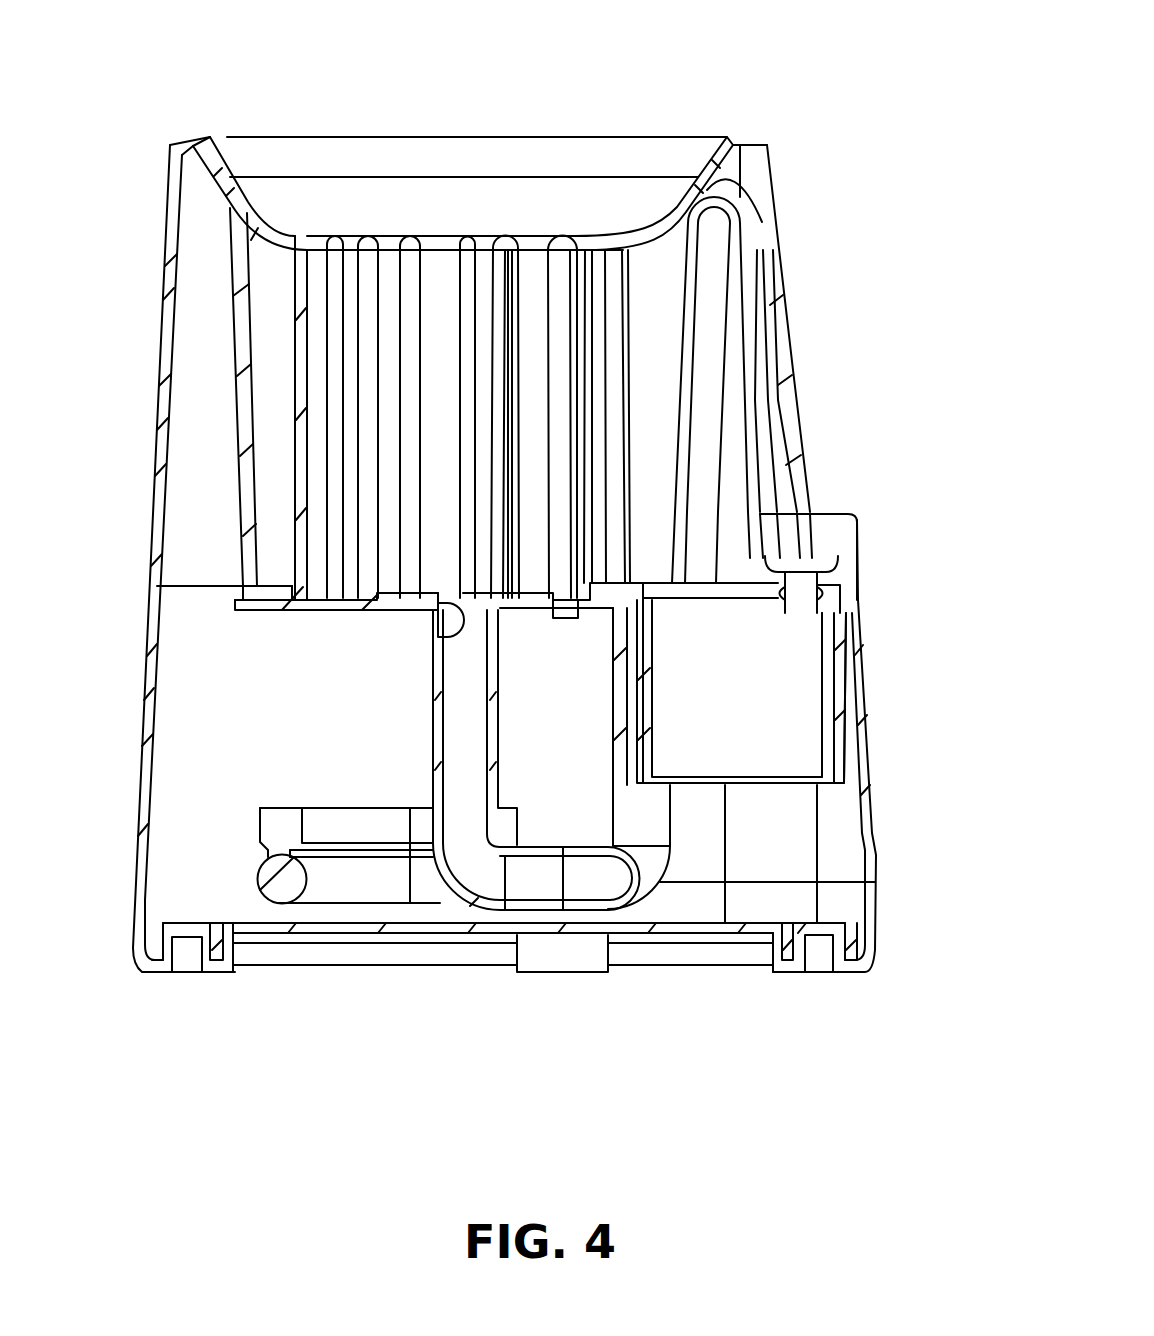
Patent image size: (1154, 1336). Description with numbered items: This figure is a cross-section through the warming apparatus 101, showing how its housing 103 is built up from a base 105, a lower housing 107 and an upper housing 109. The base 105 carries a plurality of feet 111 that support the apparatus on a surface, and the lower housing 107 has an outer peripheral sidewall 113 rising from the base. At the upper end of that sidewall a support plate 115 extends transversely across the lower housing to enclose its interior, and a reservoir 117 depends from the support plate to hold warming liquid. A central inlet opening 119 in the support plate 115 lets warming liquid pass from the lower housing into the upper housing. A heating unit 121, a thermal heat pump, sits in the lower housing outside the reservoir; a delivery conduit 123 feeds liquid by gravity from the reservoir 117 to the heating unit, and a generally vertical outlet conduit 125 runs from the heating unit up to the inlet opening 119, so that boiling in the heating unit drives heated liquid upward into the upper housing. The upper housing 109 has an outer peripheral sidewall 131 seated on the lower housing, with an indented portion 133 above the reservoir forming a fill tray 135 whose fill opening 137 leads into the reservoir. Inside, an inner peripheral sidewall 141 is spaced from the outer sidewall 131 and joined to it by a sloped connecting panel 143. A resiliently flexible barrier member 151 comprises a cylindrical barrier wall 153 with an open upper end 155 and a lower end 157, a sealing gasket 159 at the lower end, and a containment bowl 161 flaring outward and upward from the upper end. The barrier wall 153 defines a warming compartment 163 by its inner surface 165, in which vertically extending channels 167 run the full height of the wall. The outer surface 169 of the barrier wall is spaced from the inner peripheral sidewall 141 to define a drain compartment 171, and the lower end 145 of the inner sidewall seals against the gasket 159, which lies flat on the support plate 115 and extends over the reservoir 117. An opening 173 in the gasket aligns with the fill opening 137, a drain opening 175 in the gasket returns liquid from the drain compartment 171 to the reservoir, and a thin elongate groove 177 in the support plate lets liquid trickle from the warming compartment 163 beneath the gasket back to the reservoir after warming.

The warming apparatus 101 is at (755, 92).
The housing 103 is at (152, 468).
The base 105 is at (140, 930).
The lower housing 107 is at (878, 853).
The upper housing 109 is at (168, 178).
The feet 111 is at (213, 974).
The outer peripheral sidewall 113 is at (147, 770).
The support plate 115 is at (238, 610).
The reservoir 117 is at (720, 730).
The central inlet opening 119 is at (462, 622).
The heating unit 121 is at (250, 849).
The delivery conduit 123 is at (670, 820).
The outlet conduit 125 is at (430, 732).
The outer peripheral sidewall 131 is at (166, 246).
The indented portion 133 is at (758, 345).
The fill tray 135 is at (822, 600).
The fill opening 137 is at (858, 618).
The inner peripheral sidewall 141 is at (240, 306).
The connecting panel 143 is at (218, 156).
The lower end 145 is at (236, 594).
The barrier member 151 is at (297, 300).
The barrier wall 153 is at (300, 412).
The upper end 155 is at (400, 240).
The lower end 157 is at (553, 615).
The sealing gasket 159 is at (720, 582).
The containment bowl 161 is at (673, 200).
The warming compartment 163 is at (442, 322).
The inner surface 165 is at (540, 265).
The vertically extending channels 167 is at (489, 262).
The outer surface 169 is at (612, 313).
The drain compartment 171 is at (642, 377).
The opening 173 is at (783, 608).
The drain opening 175 is at (650, 577).
The groove 177 is at (600, 612).